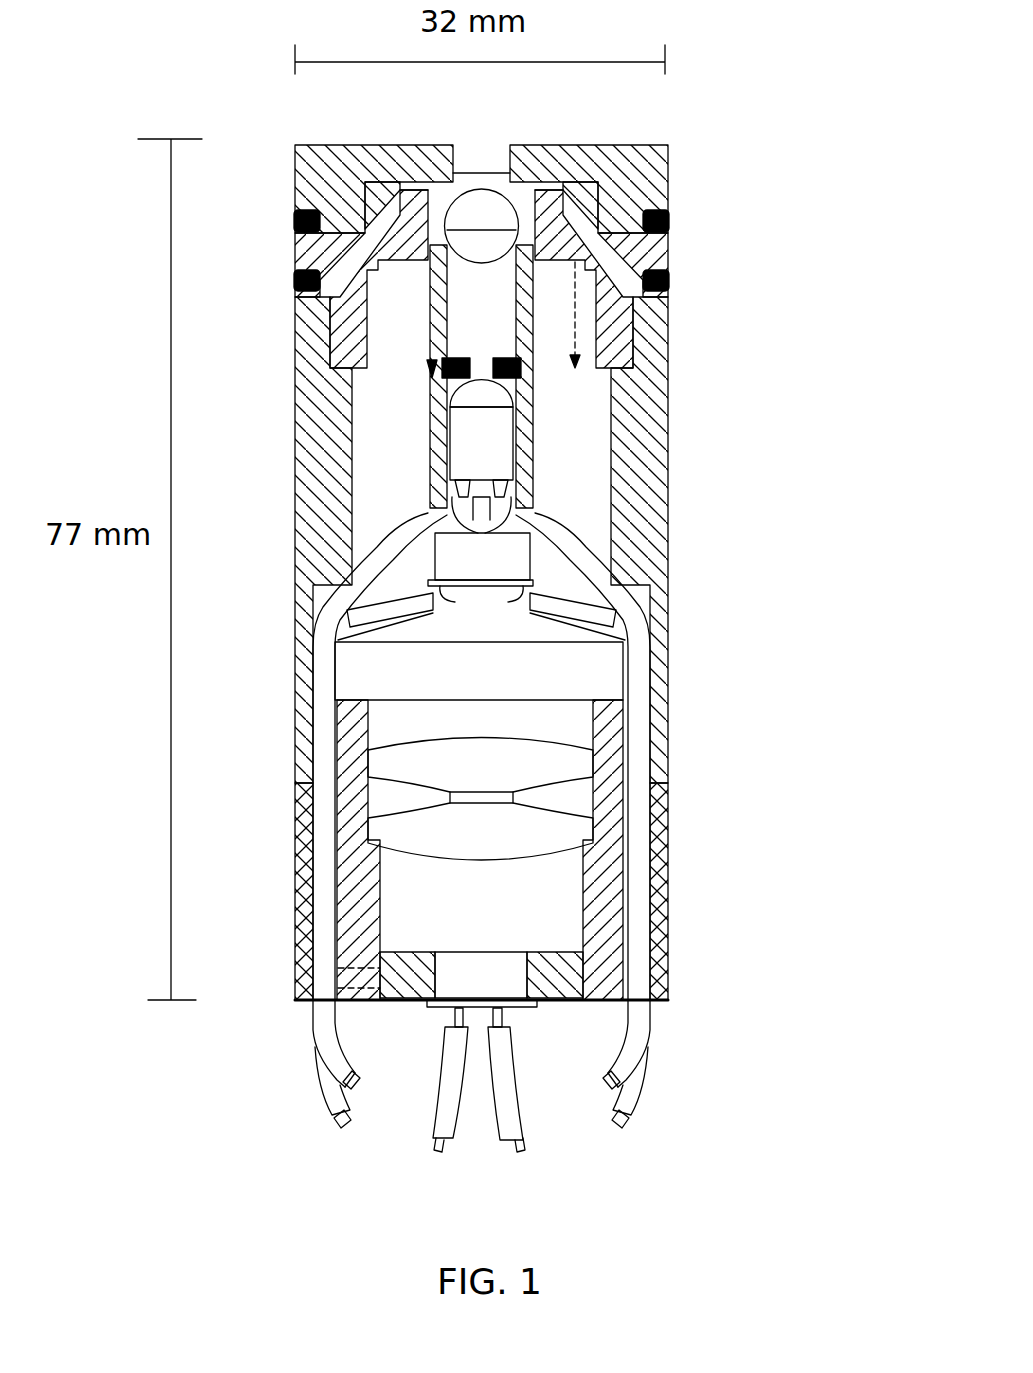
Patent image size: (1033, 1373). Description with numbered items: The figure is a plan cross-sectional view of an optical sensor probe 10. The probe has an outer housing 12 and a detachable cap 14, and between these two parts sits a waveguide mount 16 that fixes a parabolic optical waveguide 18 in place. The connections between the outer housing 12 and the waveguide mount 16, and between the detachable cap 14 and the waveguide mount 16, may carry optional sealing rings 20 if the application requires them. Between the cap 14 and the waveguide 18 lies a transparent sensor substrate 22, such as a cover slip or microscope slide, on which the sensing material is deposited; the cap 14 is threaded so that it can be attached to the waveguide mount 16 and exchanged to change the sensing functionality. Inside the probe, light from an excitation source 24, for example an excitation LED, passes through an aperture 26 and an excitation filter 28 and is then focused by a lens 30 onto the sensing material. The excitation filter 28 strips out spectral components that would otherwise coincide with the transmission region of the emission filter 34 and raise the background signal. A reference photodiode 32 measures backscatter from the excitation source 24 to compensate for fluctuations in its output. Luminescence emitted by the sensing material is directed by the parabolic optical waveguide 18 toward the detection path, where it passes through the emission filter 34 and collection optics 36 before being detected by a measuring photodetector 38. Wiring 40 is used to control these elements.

The optical sensor probe 10 is at (706, 600).
The outer housing 12 is at (335, 410).
The detachable cap 14 is at (372, 152).
The waveguide mount 16 is at (318, 252).
The parabolic optical waveguide 18 is at (560, 208).
The sealing rings 20 is at (297, 222).
The transparent sensor substrate 22 is at (515, 173).
The excitation source 24 is at (487, 442).
The aperture 26 is at (513, 360).
The excitation filter 28 is at (533, 237).
The lens 30 is at (615, 338).
The reference photodiode 32 is at (485, 557).
The emission filter 34 is at (587, 668).
The collection optics 36 is at (553, 758).
The measuring photodetector 38 is at (473, 963).
The wiring 40 is at (506, 1093).